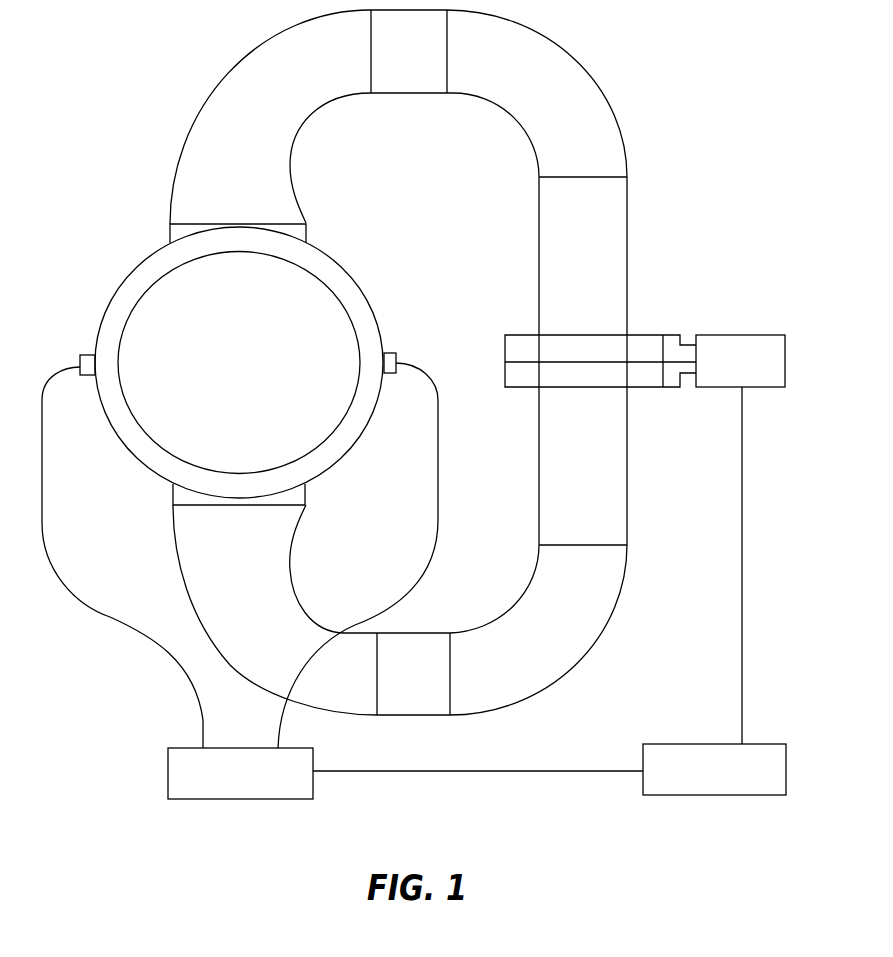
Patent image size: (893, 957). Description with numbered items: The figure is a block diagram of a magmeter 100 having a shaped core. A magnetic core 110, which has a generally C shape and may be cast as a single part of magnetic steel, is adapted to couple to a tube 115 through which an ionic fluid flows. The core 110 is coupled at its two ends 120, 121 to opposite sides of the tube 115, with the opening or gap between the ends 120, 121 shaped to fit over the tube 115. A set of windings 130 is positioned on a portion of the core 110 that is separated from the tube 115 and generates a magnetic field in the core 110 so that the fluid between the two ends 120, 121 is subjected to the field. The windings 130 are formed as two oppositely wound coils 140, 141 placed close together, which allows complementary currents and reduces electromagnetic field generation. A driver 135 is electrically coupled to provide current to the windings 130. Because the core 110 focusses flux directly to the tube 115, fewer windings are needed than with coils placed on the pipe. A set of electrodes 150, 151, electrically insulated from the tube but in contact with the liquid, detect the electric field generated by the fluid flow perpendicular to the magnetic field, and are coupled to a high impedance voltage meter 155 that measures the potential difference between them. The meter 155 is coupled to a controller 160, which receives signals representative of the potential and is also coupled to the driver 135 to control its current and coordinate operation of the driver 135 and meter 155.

The magmeter 100 is at (92, 52).
The magnetic core 110 is at (576, 62).
The tube 115 is at (348, 272).
The end of the core 120 is at (170, 245).
The end of the core 121 is at (170, 486).
The windings 130 is at (645, 335).
The driver 135 is at (742, 335).
The oppositely wound coil 140 is at (525, 334).
The oppositely wound coil 141 is at (525, 388).
The electrode 150 is at (392, 352).
The electrode 151 is at (86, 354).
The voltage meter 155 is at (243, 800).
The controller 160 is at (716, 796).